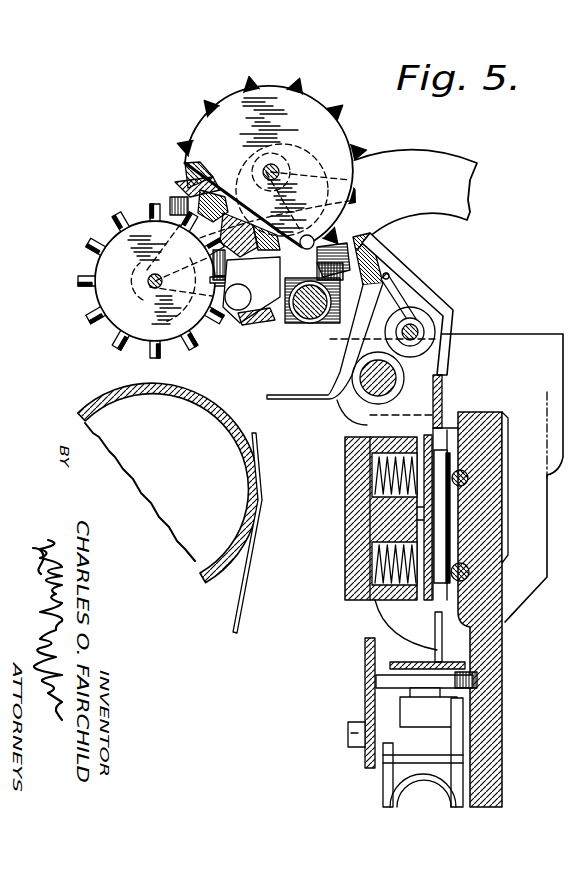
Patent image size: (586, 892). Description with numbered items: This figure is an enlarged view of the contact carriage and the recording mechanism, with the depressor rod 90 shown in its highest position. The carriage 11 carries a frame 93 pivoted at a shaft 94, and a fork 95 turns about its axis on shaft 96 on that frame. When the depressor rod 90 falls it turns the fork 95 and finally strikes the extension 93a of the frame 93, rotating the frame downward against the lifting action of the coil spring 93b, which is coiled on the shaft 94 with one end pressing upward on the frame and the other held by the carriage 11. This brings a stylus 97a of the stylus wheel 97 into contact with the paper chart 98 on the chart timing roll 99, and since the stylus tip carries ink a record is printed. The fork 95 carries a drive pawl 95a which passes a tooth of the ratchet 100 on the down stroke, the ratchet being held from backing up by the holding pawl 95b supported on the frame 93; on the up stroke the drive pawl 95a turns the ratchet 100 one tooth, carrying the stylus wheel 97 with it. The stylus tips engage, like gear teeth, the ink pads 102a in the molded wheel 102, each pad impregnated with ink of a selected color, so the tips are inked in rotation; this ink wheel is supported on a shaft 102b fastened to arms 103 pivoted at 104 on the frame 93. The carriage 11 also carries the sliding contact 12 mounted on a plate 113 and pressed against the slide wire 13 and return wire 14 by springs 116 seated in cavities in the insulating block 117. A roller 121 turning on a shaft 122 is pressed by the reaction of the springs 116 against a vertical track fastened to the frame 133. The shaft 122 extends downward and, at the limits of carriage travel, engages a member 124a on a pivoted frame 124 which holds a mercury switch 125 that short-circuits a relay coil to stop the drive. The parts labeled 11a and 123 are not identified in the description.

The molded wheel 102 is at (238, 98).
The ink pads 102a is at (190, 162).
The shaft 102b is at (271, 163).
The arms 103 is at (250, 162).
The pivot 104 is at (311, 236).
The holding pawl 95b is at (168, 200).
The ratchet 100 is at (92, 254).
The shaft 96 is at (148, 283).
The drive pawl 95a is at (226, 272).
The stylus wheel 97 is at (118, 322).
The stylus 97a is at (150, 353).
The fork 95 is at (258, 316).
The depressor rod 90 is at (306, 326).
The extension 93a is at (390, 268).
The frame 93 is at (395, 280).
The coil spring 93b is at (405, 300).
The shaft 94 is at (427, 328).
The housing boss 11a is at (382, 382).
The chart timing roll 99 is at (225, 450).
The paper chart 98 is at (244, 596).
The slide wire 13 is at (467, 477).
The springs 116 is at (355, 545).
The plate 113 is at (430, 543).
The insulating block 117 is at (347, 572).
The return wire 14 is at (505, 582).
The sliding contact 12 is at (503, 601).
The carriage 11 is at (335, 598).
The bracket 123 is at (365, 657).
The shaft 122 is at (415, 700).
The roller 121 is at (503, 680).
The member 124a is at (448, 712).
The pivoted frame 124 is at (458, 745).
The frame 133 is at (503, 780).
The mercury switch 125 is at (408, 795).